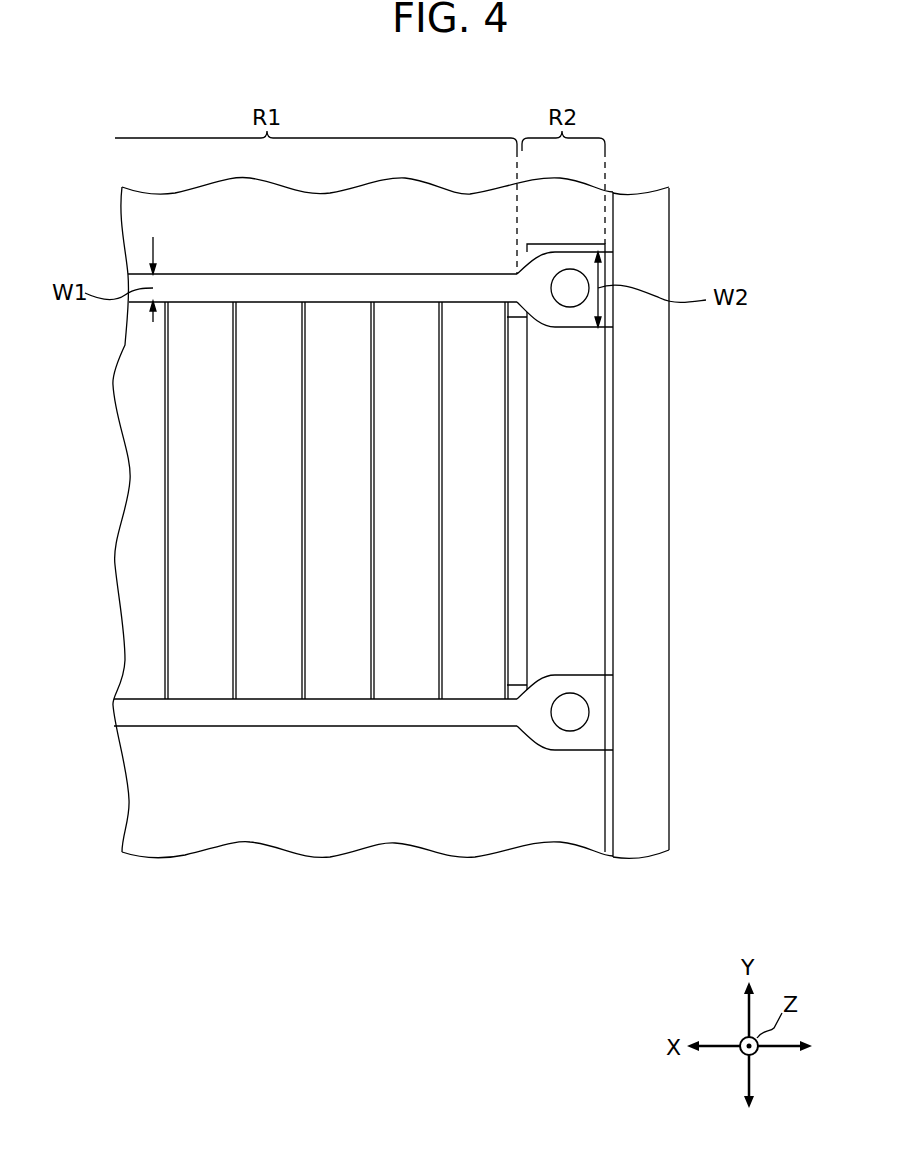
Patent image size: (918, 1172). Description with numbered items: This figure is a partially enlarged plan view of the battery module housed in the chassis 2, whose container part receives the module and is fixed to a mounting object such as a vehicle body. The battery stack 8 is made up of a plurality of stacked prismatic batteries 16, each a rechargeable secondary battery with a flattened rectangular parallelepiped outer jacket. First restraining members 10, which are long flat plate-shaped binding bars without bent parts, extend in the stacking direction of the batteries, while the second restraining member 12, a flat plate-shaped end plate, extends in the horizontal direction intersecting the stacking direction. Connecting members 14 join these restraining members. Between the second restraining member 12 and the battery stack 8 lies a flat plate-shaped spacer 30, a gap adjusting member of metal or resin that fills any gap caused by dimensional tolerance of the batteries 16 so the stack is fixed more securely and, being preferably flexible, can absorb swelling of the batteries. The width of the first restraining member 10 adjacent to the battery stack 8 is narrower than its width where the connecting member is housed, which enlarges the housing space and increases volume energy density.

The chassis 2 is at (669, 813).
The battery stack 8 is at (116, 563).
The first restraining member 10 is at (423, 726).
The second restraining member 12 is at (605, 605).
The connecting member 14 is at (575, 731).
The battery 16 is at (200, 672).
The spacer 30 is at (527, 412).